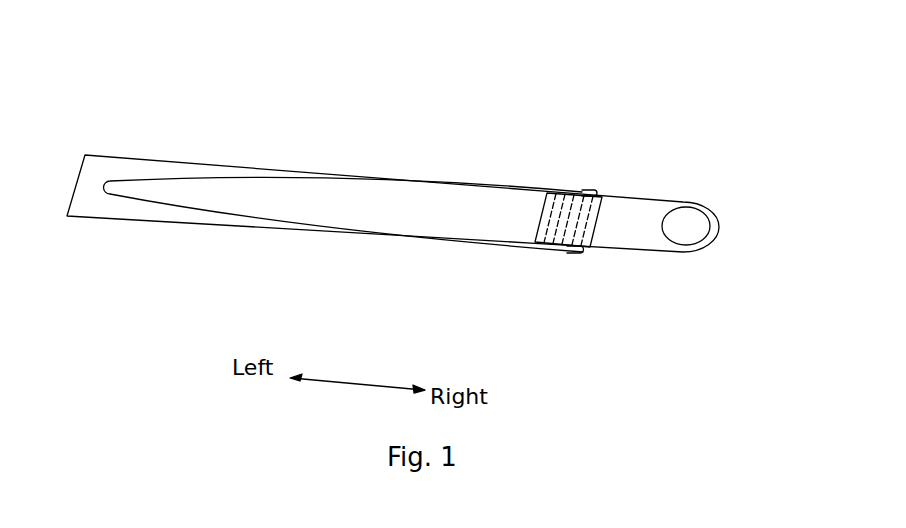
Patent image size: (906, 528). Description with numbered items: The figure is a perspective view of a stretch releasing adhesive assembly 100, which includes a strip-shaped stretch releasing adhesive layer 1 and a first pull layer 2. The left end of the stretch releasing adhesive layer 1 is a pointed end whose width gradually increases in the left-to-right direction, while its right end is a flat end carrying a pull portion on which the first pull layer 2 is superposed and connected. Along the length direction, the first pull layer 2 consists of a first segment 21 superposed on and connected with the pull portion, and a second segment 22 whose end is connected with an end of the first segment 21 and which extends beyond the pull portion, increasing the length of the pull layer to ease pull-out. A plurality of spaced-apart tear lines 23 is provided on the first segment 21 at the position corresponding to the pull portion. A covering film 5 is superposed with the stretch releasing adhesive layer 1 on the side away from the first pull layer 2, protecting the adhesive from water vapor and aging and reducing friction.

The stretch releasing adhesive assembly 100 is at (100, 100).
The stretch releasing adhesive layer 1 is at (367, 203).
The first pull layer 2 is at (760, 60).
The first segment 21 is at (613, 210).
The second segment 22 is at (672, 207).
The tear line 23 is at (572, 205).
The covering film 5 is at (103, 207).